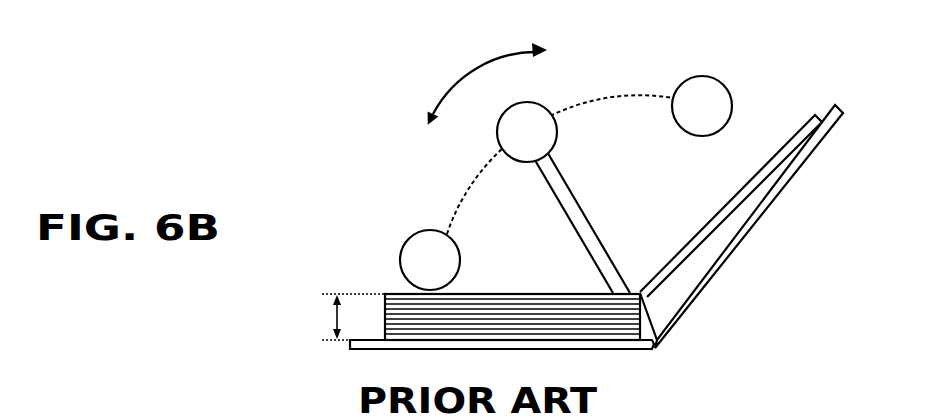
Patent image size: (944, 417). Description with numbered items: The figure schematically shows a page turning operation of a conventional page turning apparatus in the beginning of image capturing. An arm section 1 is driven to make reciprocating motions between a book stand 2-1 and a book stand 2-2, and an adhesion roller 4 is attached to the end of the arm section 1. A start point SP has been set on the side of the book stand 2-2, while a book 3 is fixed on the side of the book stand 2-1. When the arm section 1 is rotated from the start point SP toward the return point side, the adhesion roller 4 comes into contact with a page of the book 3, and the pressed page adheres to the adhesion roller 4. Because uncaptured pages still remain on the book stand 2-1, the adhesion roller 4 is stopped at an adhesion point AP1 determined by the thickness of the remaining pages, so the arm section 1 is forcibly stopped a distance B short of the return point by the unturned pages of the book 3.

The arm section 1 is at (576, 200).
The book stand 2-1 is at (350, 343).
The book stand 2-2 is at (780, 193).
The book 3 is at (497, 294).
The adhesion roller 4 is at (550, 109).
The start point SP is at (716, 74).
The adhesion point AP1 is at (399, 247).
The distance B is at (347, 317).